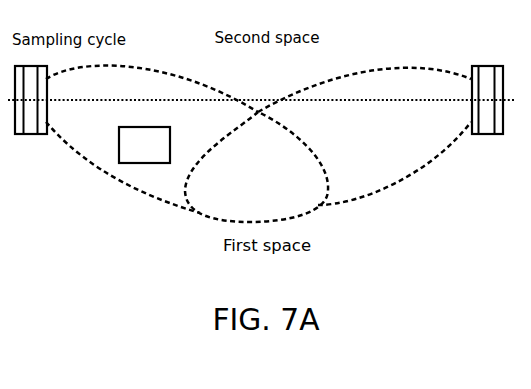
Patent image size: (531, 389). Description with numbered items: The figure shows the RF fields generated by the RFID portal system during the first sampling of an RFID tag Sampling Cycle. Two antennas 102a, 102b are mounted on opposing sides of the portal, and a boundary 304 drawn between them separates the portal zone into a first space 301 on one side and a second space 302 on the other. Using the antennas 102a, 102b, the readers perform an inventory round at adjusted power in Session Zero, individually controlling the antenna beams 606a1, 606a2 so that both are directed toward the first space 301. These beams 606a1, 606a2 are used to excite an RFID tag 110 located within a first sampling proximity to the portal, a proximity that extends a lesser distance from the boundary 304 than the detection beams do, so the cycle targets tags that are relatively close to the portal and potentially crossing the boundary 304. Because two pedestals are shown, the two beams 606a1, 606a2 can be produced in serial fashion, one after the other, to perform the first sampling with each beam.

The antenna 102a is at (31, 135).
The antenna 102b is at (486, 124).
The RFID tag 110 is at (131, 155).
The first space 301 is at (252, 276).
The second space 302 is at (263, 68).
The boundary 304 is at (352, 98).
The first sampling RF beam 606a1 is at (96, 169).
The first sampling RF beam 606a2 is at (383, 190).